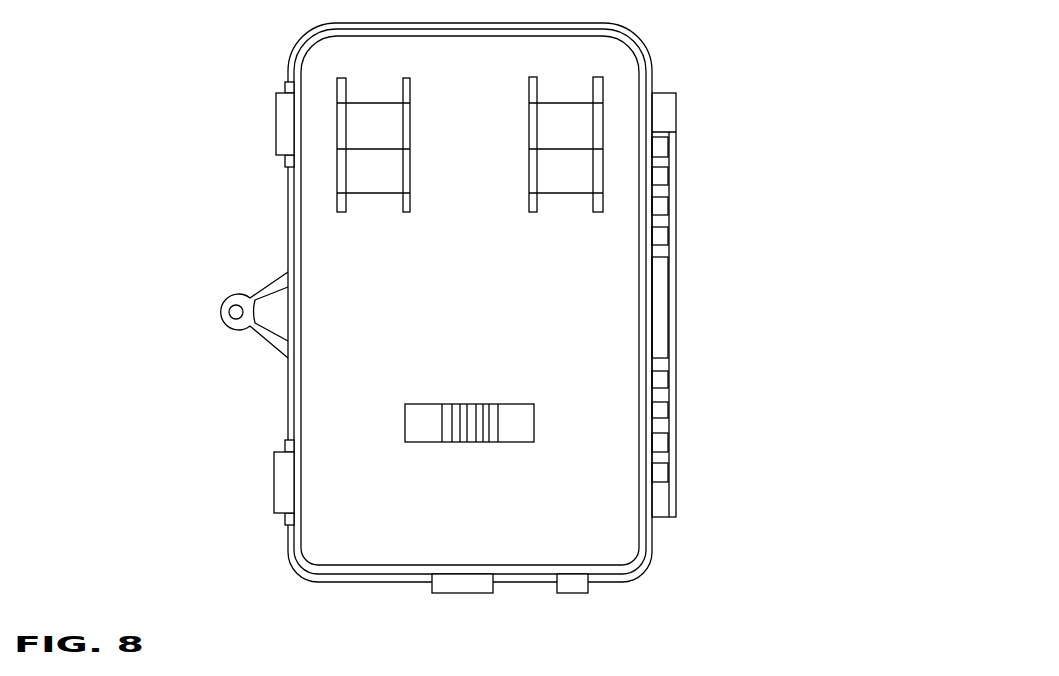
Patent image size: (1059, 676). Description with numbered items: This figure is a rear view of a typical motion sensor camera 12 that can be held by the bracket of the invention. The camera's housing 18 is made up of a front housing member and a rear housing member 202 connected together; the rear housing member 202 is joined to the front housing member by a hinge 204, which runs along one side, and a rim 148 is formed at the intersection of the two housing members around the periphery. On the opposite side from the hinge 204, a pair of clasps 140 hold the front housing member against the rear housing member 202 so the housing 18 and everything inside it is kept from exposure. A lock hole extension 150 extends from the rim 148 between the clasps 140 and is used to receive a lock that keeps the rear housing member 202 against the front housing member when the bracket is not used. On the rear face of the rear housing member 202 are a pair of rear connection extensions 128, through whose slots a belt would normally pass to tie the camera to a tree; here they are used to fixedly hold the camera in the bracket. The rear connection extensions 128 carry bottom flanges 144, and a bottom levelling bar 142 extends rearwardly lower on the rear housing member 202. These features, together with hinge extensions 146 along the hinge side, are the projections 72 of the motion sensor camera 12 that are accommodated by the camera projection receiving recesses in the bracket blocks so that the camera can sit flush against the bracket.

The motion sensor camera 12 is at (245, 39).
The housing 18 is at (652, 568).
The projections 72 is at (282, 122).
The rear connection extensions 128 is at (528, 107).
The clasps 140 is at (276, 97).
The bottom levelling bar 142 is at (492, 447).
The bottom flanges 144 is at (337, 192).
The hinge extensions 146 is at (650, 103).
The rim 148 is at (287, 228).
The lock hole extension 150 is at (228, 293).
The rear housing member 202 is at (643, 32).
The hinge 204 is at (680, 323).